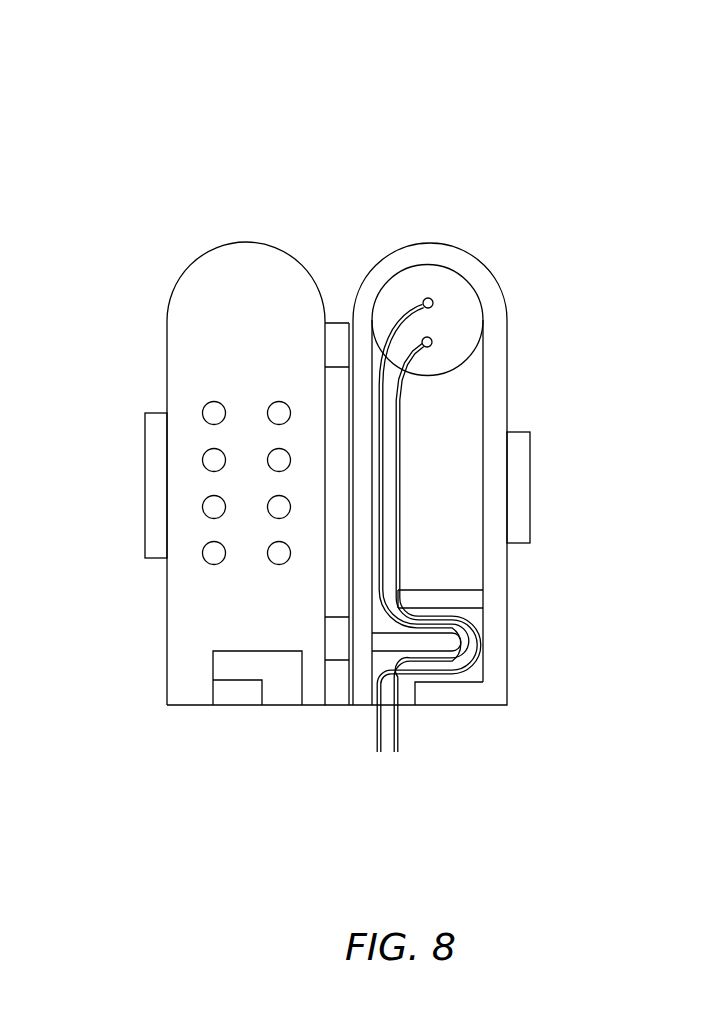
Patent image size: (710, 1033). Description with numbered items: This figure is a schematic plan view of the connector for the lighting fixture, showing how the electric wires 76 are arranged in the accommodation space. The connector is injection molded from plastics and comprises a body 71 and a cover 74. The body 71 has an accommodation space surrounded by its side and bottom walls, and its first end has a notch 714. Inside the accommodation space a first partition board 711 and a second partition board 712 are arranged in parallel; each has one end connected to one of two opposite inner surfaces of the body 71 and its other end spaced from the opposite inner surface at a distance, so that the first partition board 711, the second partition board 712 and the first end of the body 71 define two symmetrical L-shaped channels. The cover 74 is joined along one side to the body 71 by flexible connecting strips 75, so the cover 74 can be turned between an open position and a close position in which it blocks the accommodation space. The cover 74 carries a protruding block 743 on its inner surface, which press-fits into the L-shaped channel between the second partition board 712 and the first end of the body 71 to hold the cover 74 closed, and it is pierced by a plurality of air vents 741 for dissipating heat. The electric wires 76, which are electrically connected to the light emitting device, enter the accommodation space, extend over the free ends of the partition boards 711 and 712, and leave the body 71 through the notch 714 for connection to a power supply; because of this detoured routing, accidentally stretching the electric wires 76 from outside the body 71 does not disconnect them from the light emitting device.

The body 71 is at (498, 375).
The first partition board 711 is at (443, 597).
The second partition board 712 is at (423, 645).
The notch 714 is at (408, 705).
The cover 74 is at (252, 287).
The air vents 741 is at (211, 410).
The protruding block 743 is at (238, 667).
The flexible connecting strips 75 is at (337, 333).
The electric wires 76 is at (402, 508).